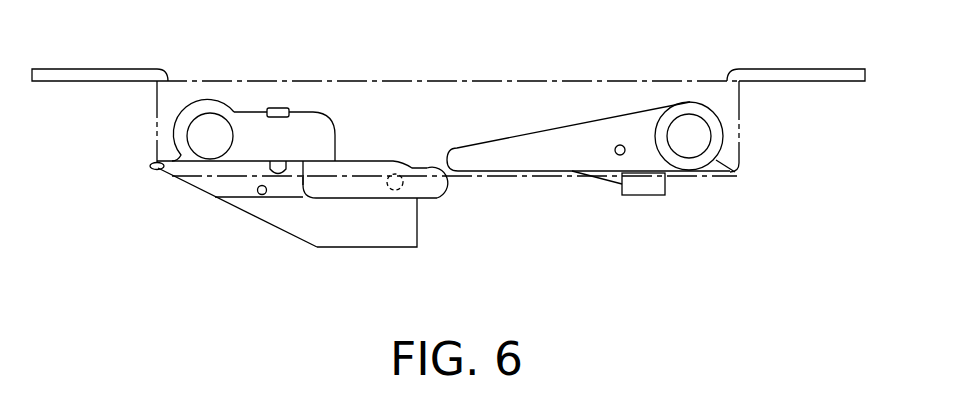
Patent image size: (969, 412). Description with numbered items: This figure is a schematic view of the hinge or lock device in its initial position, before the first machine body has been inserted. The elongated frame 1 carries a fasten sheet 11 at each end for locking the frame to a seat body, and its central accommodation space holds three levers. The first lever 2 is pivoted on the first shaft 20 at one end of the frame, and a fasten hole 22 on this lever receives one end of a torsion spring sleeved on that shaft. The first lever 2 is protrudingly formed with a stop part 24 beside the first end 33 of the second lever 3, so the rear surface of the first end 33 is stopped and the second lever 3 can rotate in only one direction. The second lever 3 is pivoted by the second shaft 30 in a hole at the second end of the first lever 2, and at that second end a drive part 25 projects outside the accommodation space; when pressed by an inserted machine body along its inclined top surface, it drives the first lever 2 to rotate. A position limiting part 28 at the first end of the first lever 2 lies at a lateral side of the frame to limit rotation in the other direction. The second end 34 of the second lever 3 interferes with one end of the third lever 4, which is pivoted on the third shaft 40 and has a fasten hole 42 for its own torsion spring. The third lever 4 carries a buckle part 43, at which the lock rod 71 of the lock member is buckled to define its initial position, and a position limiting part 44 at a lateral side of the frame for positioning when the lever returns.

The frame 1 is at (257, 82).
The fasten sheet 11 is at (112, 75).
The first lever 2 is at (282, 213).
The first shaft 20 is at (203, 136).
The fasten hole 22 is at (260, 194).
The stop part 24 is at (282, 172).
The drive part 25 is at (365, 233).
The position limiting part 28 is at (160, 168).
The second lever 3 is at (370, 168).
The second shaft 30 is at (400, 190).
The first end 33 is at (330, 192).
The second end 34 is at (440, 190).
The third lever 4 is at (540, 152).
The third shaft 40 is at (695, 138).
The fasten hole 42 is at (618, 145).
The buckle part 43 is at (635, 185).
The position limiting part 44 is at (722, 163).
The lock rod 71 is at (650, 187).